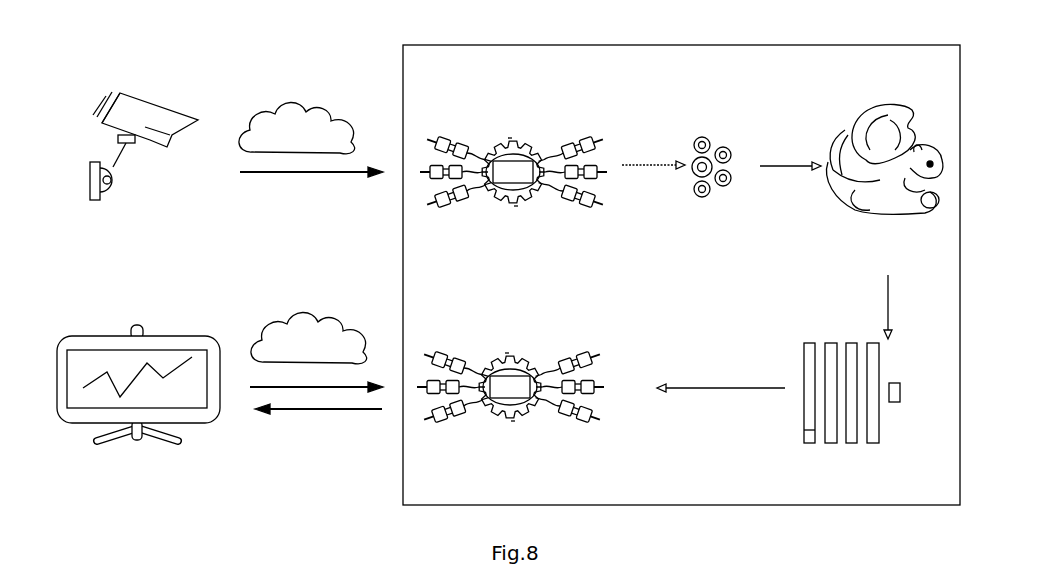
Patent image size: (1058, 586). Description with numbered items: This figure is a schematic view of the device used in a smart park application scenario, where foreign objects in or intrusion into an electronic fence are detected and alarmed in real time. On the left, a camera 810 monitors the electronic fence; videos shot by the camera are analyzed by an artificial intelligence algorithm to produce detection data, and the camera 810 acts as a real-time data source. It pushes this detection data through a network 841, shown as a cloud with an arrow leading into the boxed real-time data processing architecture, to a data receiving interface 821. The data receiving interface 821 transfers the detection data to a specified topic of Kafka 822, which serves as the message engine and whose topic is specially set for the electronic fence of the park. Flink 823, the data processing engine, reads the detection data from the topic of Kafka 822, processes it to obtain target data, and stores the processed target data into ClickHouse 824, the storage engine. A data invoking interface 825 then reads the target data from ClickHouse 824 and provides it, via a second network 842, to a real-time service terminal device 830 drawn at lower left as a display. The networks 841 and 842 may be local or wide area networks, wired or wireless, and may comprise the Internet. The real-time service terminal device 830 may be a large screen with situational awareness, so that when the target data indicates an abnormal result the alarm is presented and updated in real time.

The camera 810 is at (152, 100).
The network 841 is at (313, 114).
The network 842 is at (317, 328).
The data receiving interface 821 is at (526, 137).
The Kafka 822 is at (698, 136).
The Flink 823 is at (841, 137).
The ClickHouse 824 is at (850, 342).
The data invoking interface 825 is at (527, 355).
The real-time service terminal device 830 is at (158, 334).